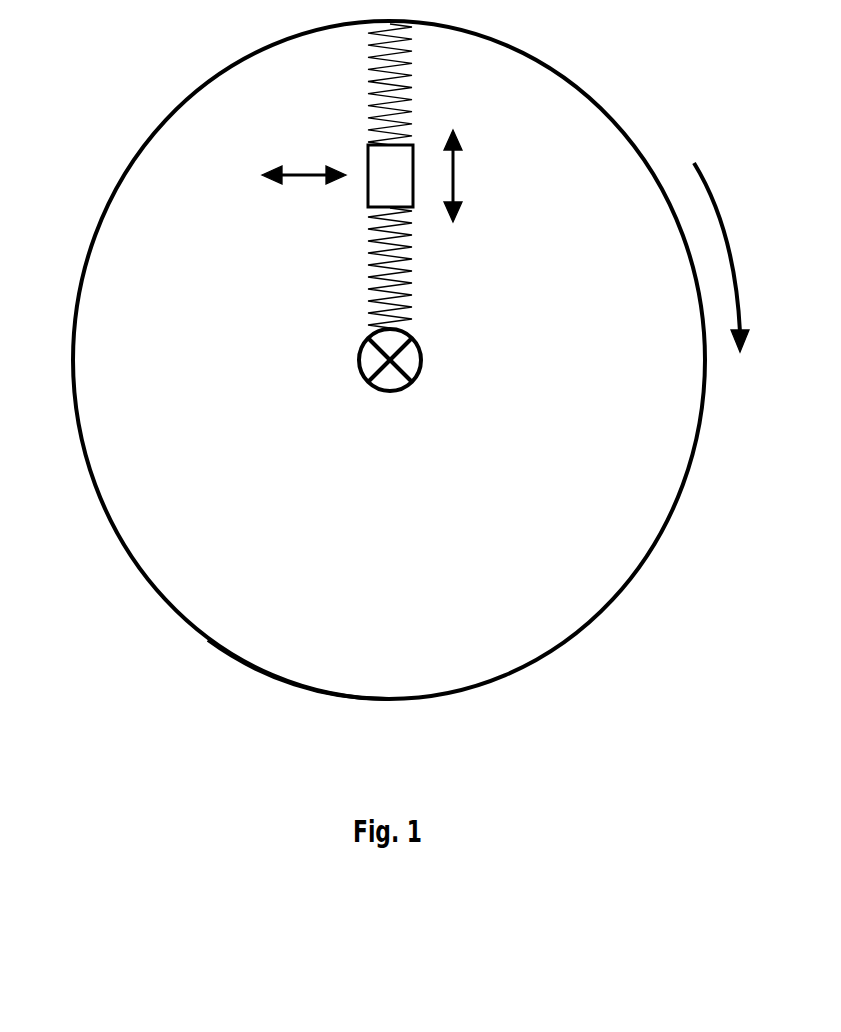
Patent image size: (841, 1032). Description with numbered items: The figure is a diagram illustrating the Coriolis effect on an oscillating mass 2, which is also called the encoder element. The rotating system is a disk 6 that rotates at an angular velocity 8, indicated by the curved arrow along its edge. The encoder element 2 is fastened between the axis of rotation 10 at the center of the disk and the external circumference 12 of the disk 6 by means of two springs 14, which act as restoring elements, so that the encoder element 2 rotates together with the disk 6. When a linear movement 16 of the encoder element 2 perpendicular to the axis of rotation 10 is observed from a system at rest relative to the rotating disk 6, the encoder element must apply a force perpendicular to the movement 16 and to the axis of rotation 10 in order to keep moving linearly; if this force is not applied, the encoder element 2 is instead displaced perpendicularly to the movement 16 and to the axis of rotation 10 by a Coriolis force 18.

The oscillating mass 2 is at (367, 193).
The disk 6 is at (236, 145).
The angular velocity 8 is at (728, 247).
The axis of rotation 10 is at (360, 360).
The external circumference 12 is at (208, 640).
The springs 14 is at (412, 76).
The linear movement 16 is at (455, 176).
The Coriolis force 18 is at (310, 174).